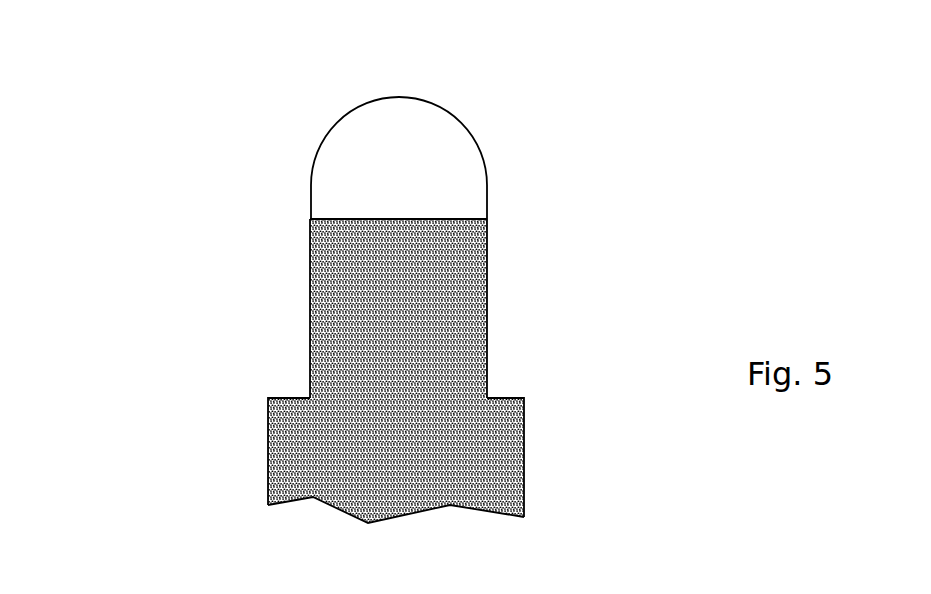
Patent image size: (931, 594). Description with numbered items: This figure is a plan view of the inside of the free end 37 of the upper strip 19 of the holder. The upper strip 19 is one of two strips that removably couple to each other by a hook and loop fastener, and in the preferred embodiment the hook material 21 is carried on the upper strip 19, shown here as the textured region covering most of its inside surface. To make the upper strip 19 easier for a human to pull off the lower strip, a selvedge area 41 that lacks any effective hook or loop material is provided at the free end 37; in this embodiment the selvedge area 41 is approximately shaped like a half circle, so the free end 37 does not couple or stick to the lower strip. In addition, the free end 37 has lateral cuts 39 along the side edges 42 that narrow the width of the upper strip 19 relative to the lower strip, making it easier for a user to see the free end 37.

The free end 37 is at (472, 135).
The selvedge area 41 is at (352, 163).
The lateral cuts 39 is at (308, 351).
The side edges 42 is at (523, 433).
The upper strip 19 is at (268, 473).
The hook material 21 is at (440, 461).